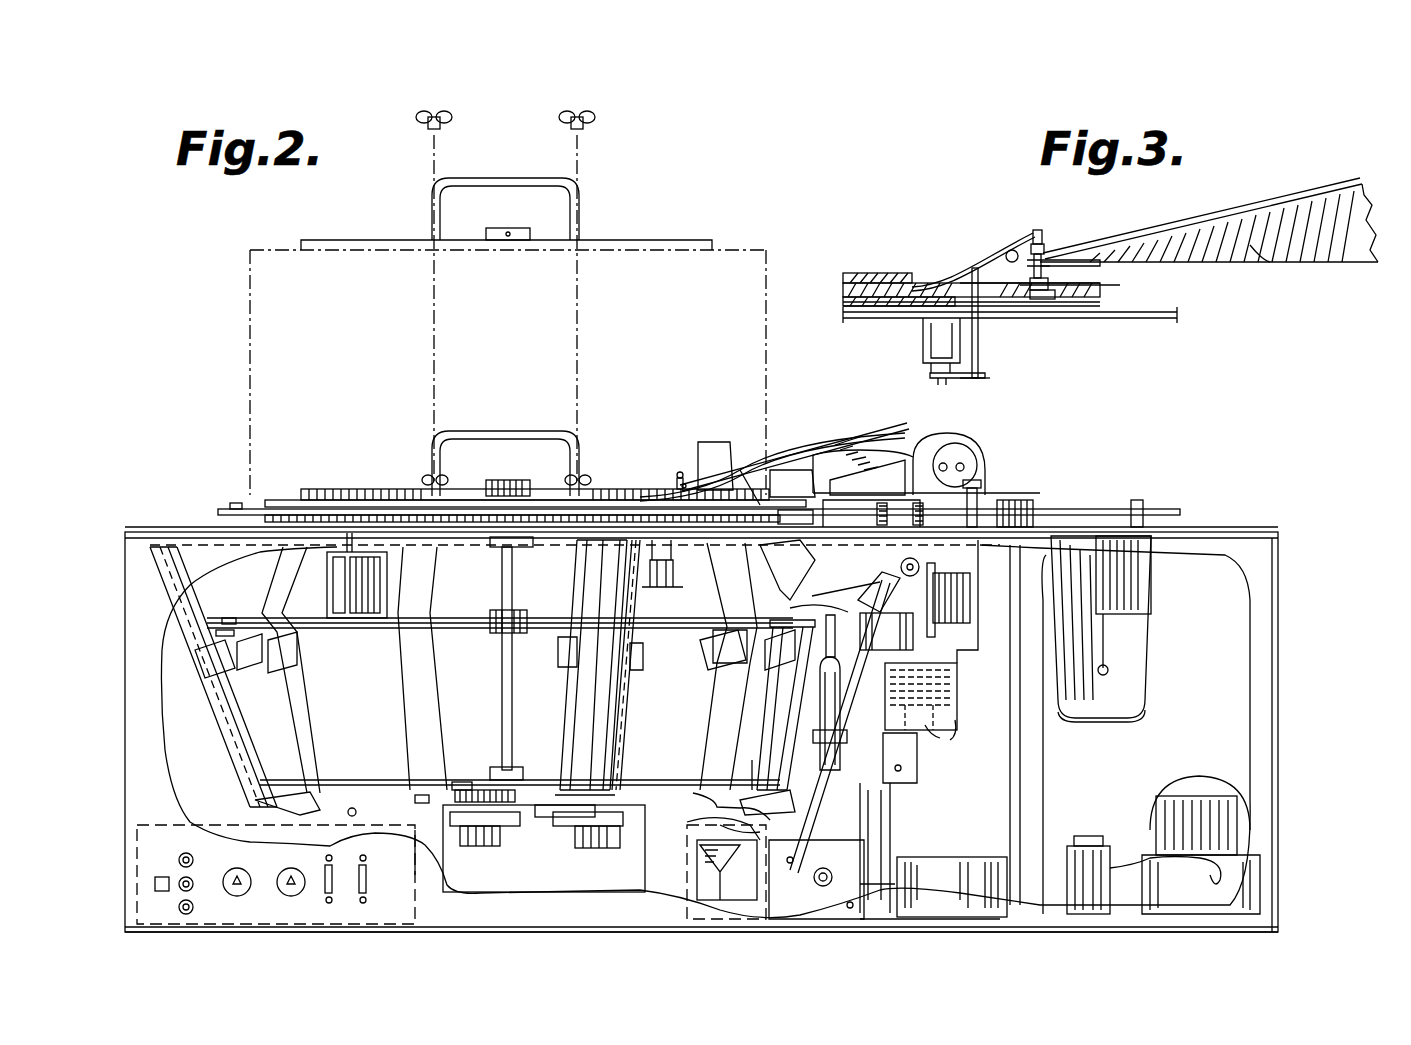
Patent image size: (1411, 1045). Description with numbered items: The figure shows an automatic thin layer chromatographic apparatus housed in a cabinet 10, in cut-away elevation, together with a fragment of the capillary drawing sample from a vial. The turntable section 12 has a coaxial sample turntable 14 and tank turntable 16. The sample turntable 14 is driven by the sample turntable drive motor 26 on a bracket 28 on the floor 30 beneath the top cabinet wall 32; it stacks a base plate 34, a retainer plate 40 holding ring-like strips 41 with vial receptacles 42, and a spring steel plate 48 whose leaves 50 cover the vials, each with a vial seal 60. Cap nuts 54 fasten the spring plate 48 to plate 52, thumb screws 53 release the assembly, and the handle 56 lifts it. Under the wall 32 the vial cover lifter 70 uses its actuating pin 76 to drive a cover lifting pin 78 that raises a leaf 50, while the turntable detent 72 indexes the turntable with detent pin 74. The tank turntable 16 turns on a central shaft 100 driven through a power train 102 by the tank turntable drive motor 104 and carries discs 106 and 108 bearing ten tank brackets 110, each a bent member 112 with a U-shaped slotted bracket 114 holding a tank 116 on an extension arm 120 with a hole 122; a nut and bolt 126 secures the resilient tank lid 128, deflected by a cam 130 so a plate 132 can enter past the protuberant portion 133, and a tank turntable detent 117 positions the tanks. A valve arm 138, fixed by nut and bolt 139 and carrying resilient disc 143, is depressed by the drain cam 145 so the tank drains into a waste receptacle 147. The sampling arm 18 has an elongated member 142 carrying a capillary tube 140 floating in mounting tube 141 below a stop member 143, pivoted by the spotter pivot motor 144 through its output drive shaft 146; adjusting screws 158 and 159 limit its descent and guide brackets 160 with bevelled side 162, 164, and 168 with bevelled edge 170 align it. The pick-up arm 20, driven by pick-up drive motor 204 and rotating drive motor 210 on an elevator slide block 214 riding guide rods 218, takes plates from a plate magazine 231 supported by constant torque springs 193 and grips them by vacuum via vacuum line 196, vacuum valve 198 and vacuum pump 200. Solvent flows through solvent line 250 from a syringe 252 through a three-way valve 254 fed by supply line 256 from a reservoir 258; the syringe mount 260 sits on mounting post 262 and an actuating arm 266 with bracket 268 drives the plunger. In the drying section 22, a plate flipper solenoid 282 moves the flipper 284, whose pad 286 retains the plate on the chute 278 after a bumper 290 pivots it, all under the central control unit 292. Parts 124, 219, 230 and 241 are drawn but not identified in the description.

In FIG. 2, the cabinet 10 is at (1282, 574).
In FIG. 2, the turntable section 12 is at (190, 675).
In FIG. 3, the sample turntable 14 is at (880, 282).
In FIG. 2, the tank turntable 16 is at (353, 634).
In FIG. 2, the pivotable sampling arm 18 is at (817, 442).
In FIG. 3, the pivotable sampling arm 18 is at (1212, 218).
In FIG. 2, the pivotable pick-up arm 20 is at (845, 722).
In FIG. 2, the drying section 22 is at (1152, 652).
In FIG. 2, the sample turntable drive motor 26 is at (480, 846).
In FIG. 2, the bracket 28 is at (444, 868).
In FIG. 2, the floor 30 is at (522, 930).
In FIG. 2, the top cabinet wall 32 is at (1252, 524).
In FIG. 3, the top cabinet wall 32 is at (1140, 322).
In FIG. 2, the base plate 34 is at (352, 512).
In FIG. 3, the base plate 34 is at (843, 303).
In FIG. 2, the retainer plate 40 is at (238, 509).
In FIG. 3, the retainer plate 40 is at (1100, 286).
In FIG. 2, the ring-like strips 41 is at (236, 503).
In FIG. 3, the ring-like strips 41 is at (1030, 290).
In FIG. 3, the receptacles 42 is at (1048, 272).
In FIG. 2, the spring steel plate 48 is at (262, 250).
In FIG. 2, the leaves 50 is at (690, 495).
In FIG. 3, the leaves 50 is at (985, 265).
In FIG. 2, the plate 52 is at (678, 240).
In FIG. 3, the plate 52 is at (852, 273).
In FIG. 2, the thumb screws 53 is at (565, 120).
In FIG. 2, the cap nuts 54 is at (520, 486).
In FIG. 2, the lift handle 56 is at (582, 210).
In FIG. 3, the vial seal 60 is at (1008, 250).
In FIG. 2, the leaf spring vial cover lifter 70 is at (694, 592).
In FIG. 2, the sample turntable detent 72 is at (340, 602).
In FIG. 2, the detent pin 74 is at (322, 573).
In FIG. 3, the actuating pin 76 is at (935, 350).
In FIG. 2, the cover lifting pin 78 is at (660, 585).
In FIG. 3, the cover lifting pin 78 is at (980, 305).
In FIG. 2, the central shaft 100 is at (510, 738).
In FIG. 2, the power train 102 is at (516, 780).
In FIG. 2, the tank turntable drive motor 104 is at (604, 838).
In FIG. 2, the disc 106 is at (470, 622).
In FIG. 2, the disc 108 is at (462, 784).
In FIG. 2, the mounting tank brackets 110 is at (406, 722).
In FIG. 2, the bent member 112 is at (268, 602).
In FIG. 2, the U-shaped slotted bracket 114 is at (290, 660).
In FIG. 2, the tank 116 is at (236, 738).
In FIG. 2, the tank turntable detent 117 is at (695, 800).
In FIG. 2, the extension arm 120 is at (420, 803).
In FIG. 2, the hole 122 is at (357, 812).
In FIG. 2, the nut 124 is at (484, 798).
In FIG. 2, the nut and bolt 126 is at (245, 599).
In FIG. 2, the tank lid 128 is at (810, 548).
In FIG. 2, the cam 130 is at (794, 517).
In FIG. 2, the chromatographic plate 132 is at (957, 683).
In FIG. 2, the protuberant portion 133 is at (605, 692).
In FIG. 2, the valve arm 138 is at (312, 805).
In FIG. 2, the nut and bolt 139 is at (750, 786).
In FIG. 3, the capillary tube 140 is at (1052, 296).
In FIG. 2, the cylindrical mounting tube 141 is at (683, 484).
In FIG. 3, the cylindrical mounting tube 141 is at (1048, 266).
In FIG. 2, the elongated member 142 is at (858, 452).
In FIG. 3, the elongated member 142 is at (1260, 235).
In FIG. 2, the stop member 143 is at (682, 474).
In FIG. 3, the stop member 143 is at (1042, 240).
In FIG. 2, the spotter pivot motor 144 is at (964, 462).
In FIG. 2, the drain cam 145 is at (740, 822).
In FIG. 2, the output drive shaft 146 is at (946, 446).
In FIG. 2, the waste receptacle 147 is at (712, 858).
In FIG. 2, the adjusting screw 158 is at (856, 492).
In FIG. 2, the adjusting screw 159 is at (910, 495).
In FIG. 2, the spotter positioning guide bracket 160 is at (716, 445).
In FIG. 2, the bevelled side 162 is at (742, 470).
In FIG. 2, the spotter positioning guide bracket 164 is at (782, 470).
In FIG. 2, the spotter positioning bracket 168 is at (978, 497).
In FIG. 2, the bevelled edge 170 is at (982, 482).
In FIG. 2, the constant torque springs 193 is at (935, 766).
In FIG. 2, the vacuum line 196 is at (1048, 764).
In FIG. 2, the vacuum valve 198 is at (1087, 846).
In FIG. 2, the vacuum pump 200 is at (1225, 815).
In FIG. 2, the pick-up drive motor 204 is at (968, 600).
In FIG. 2, the pick-up rotating drive motor 210 is at (900, 642).
In FIG. 2, the elevator slide block 214 is at (844, 636).
In FIG. 2, the guide rods 218 is at (888, 866).
In FIG. 2, the pivot 219 is at (818, 890).
In FIG. 2, the plate 230 is at (871, 513).
In FIG. 2, the plate magazine 231 is at (946, 740).
In FIG. 2, the stud 241 is at (900, 514).
In FIG. 2, the solvent line 250 is at (859, 569).
In FIG. 2, the solvent syringe 252 is at (833, 700).
In FIG. 2, the three-way valve 254 is at (818, 602).
In FIG. 2, the solvent supply line 256 is at (744, 830).
In FIG. 2, the solvent reservoir 258 is at (945, 922).
In FIG. 2, the syringe mount 260 is at (920, 750).
In FIG. 2, the mounting post 262 is at (905, 892).
In FIG. 2, the actuating arm 266 is at (892, 808).
In FIG. 2, the bracket 268 is at (892, 838).
In FIG. 2, the chute 278 is at (1140, 714).
In FIG. 2, the plate flipper solenoid 282 is at (1152, 575).
In FIG. 2, the flipper 284 is at (1145, 500).
In FIG. 2, the pad 286 is at (1110, 671).
In FIG. 2, the bumper 290 is at (1032, 505).
In FIG. 2, the central control unit 292 is at (276, 874).